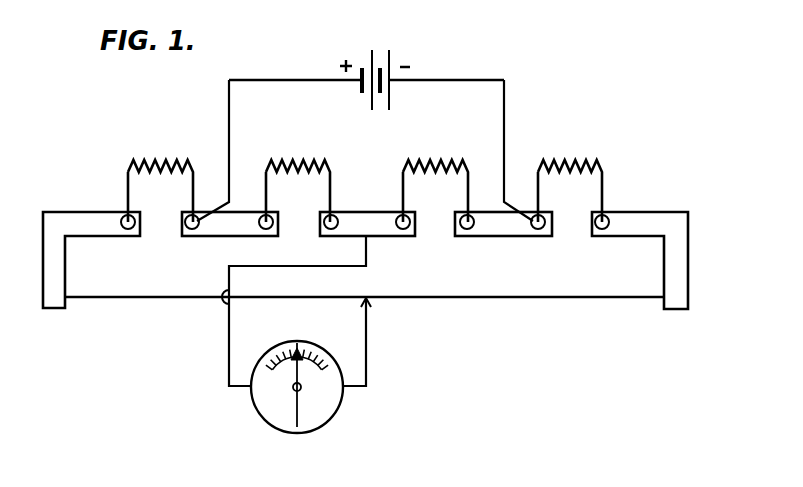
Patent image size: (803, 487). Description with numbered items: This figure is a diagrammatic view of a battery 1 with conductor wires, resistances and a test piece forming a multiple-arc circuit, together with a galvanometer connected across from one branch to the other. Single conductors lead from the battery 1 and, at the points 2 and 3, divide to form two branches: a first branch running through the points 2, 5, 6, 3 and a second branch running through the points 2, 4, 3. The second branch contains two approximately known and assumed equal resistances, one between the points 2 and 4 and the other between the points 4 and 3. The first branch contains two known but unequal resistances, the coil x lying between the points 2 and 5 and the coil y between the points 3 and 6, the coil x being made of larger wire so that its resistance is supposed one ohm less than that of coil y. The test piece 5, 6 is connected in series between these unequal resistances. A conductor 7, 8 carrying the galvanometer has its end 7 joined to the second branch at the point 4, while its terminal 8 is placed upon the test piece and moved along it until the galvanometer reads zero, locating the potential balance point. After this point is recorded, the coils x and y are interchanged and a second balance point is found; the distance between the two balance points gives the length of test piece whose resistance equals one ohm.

The battery 1 is at (366, 67).
The dividing point 2 is at (230, 158).
The dividing point 3 is at (503, 158).
The point of second branch 4 is at (378, 210).
The test piece terminal 5 is at (91, 273).
The test piece terminal 6 is at (640, 275).
The conductor end 7 is at (311, 311).
The galvanometer terminal 8 is at (368, 342).
The coil x is at (160, 179).
The coil y is at (570, 180).